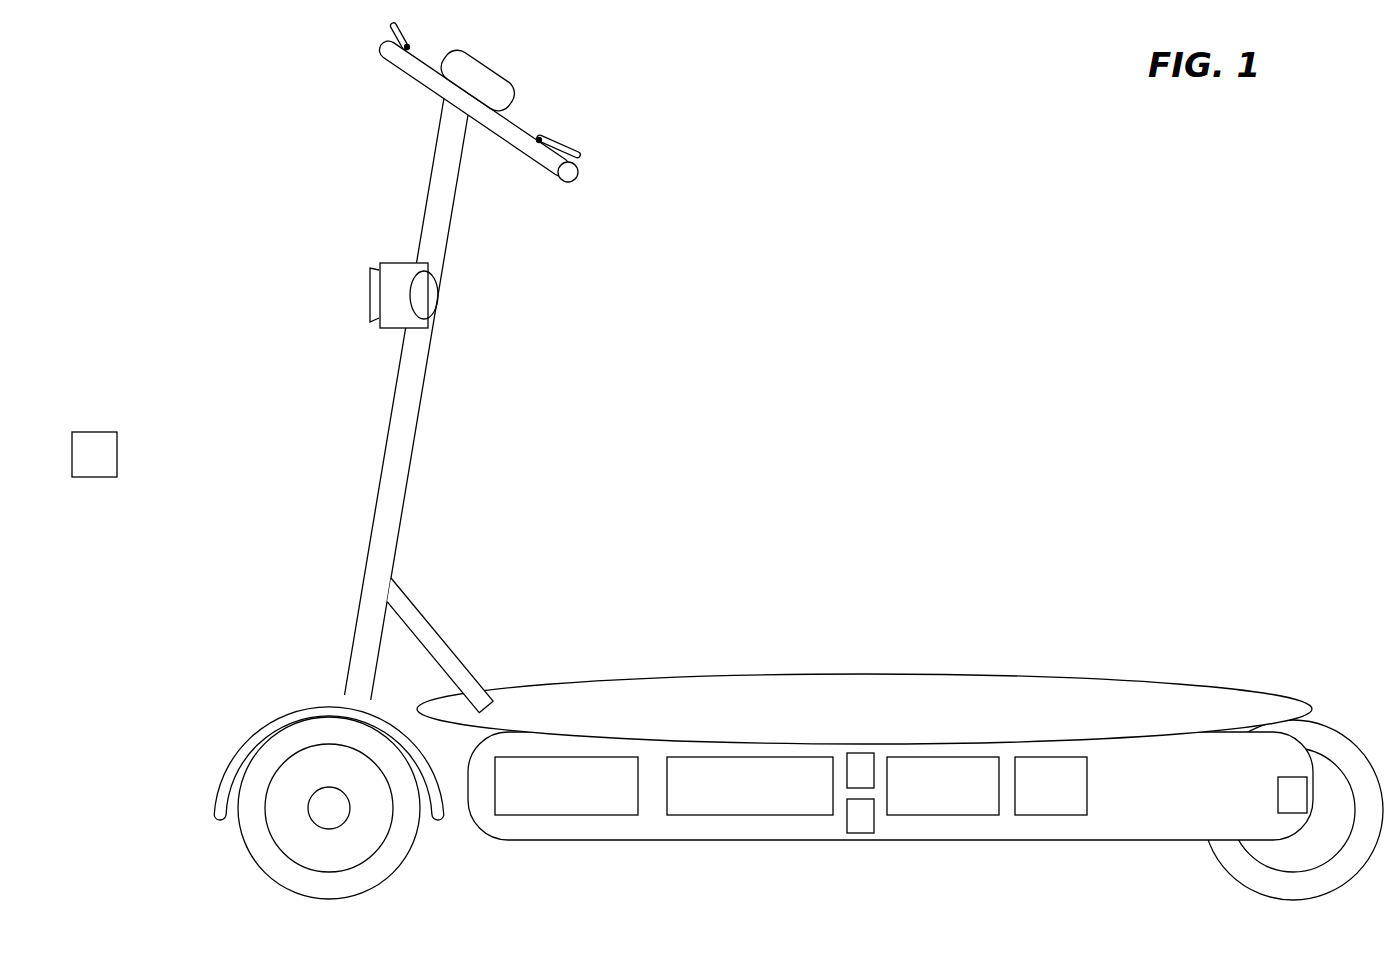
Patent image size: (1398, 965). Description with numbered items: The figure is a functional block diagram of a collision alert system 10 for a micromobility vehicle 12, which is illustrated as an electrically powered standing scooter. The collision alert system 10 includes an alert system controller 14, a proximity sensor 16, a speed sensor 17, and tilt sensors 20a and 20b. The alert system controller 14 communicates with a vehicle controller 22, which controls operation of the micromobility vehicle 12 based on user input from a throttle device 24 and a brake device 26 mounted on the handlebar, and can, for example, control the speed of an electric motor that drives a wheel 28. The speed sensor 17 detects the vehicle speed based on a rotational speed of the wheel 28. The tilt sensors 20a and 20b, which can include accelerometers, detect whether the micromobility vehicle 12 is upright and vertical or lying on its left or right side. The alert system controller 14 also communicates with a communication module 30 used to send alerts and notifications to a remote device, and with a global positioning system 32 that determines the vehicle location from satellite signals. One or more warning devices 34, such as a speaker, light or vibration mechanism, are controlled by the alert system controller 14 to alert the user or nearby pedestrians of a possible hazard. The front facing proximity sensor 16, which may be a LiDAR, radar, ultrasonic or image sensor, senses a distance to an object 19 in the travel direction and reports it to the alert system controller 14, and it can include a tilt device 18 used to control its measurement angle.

The collision alert system 10 is at (776, 574).
The micromobility vehicle 12 is at (418, 440).
The alert system controller 14 is at (722, 816).
The proximity sensor 16 is at (397, 262).
The speed sensor 17 is at (1278, 787).
The tilt device 18 is at (425, 290).
The object 19 is at (117, 450).
The tilt sensor 20a is at (873, 833).
The tilt sensor 20b is at (882, 753).
The vehicle controller 22 is at (574, 816).
The throttle device 24 is at (410, 36).
The brake device 26 is at (563, 134).
The wheel 28 is at (1233, 880).
The communication module 30 is at (967, 816).
The global positioning system 32 is at (1052, 816).
The warning device 34 is at (495, 72).